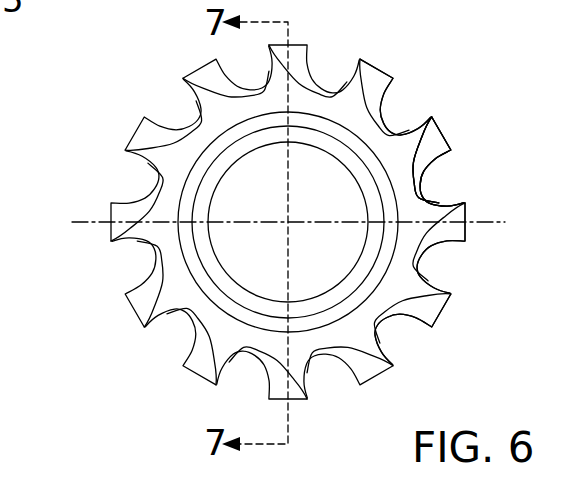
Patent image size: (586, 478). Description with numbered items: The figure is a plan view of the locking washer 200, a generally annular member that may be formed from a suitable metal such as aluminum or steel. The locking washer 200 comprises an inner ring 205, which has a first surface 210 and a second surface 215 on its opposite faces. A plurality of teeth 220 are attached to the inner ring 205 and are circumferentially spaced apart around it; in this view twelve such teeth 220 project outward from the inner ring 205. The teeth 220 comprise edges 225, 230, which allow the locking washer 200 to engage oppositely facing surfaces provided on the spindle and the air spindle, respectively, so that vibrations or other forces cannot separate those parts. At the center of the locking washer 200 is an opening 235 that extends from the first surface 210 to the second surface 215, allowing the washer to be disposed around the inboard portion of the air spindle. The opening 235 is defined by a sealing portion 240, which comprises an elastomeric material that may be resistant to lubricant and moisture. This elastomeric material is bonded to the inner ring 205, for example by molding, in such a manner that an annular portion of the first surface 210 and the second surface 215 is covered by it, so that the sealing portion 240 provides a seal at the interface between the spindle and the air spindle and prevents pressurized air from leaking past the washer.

The locking washer 200 is at (93, 97).
The inner ring 205 is at (400, 256).
The first surface 210 is at (418, 200).
The second surface 215 is at (412, 315).
The teeth 220 is at (444, 141).
The edge 225 is at (432, 146).
The edge 230 is at (423, 167).
The opening 235 is at (233, 198).
The sealing portion 240 is at (183, 207).